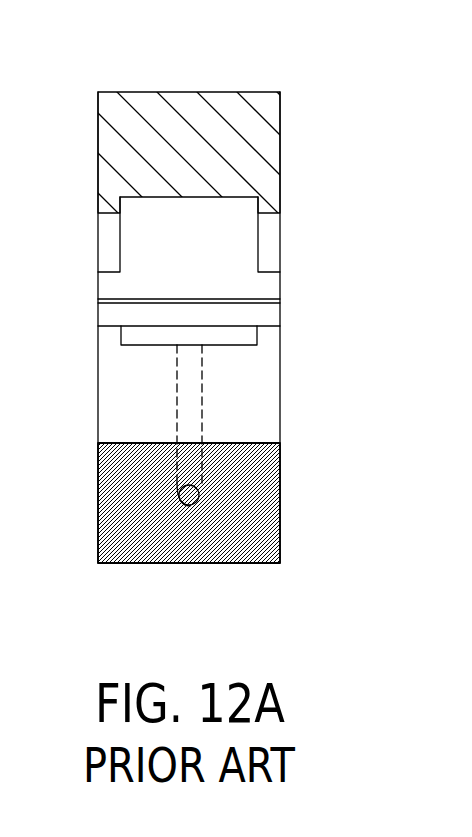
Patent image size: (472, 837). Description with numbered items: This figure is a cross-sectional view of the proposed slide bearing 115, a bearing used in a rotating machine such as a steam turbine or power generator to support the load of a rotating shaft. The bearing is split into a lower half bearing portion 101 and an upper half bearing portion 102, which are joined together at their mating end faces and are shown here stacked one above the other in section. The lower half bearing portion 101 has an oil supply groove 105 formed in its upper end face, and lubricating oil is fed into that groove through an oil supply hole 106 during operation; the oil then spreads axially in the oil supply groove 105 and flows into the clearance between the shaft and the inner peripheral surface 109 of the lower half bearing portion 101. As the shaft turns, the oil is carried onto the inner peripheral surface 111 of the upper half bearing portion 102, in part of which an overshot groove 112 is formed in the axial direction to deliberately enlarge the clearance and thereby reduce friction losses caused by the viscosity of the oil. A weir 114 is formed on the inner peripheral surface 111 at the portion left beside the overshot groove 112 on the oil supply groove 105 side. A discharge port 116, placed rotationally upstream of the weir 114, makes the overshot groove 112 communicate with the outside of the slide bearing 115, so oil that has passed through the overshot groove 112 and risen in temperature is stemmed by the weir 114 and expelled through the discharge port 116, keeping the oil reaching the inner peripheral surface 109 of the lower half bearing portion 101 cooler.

The lower half bearing portion 101 is at (98, 465).
The upper half bearing portion 102 is at (108, 145).
The oil supply groove 105 is at (250, 332).
The oil supply hole 106 is at (192, 382).
The inner peripheral surface of the lower half bearing portion 109 is at (228, 430).
The inner peripheral surface of the upper half bearing portion 111 is at (270, 223).
The overshot groove 112 is at (168, 203).
The weir 114 is at (197, 317).
The slide bearing 115 is at (309, 84).
The discharge port 116 is at (270, 292).